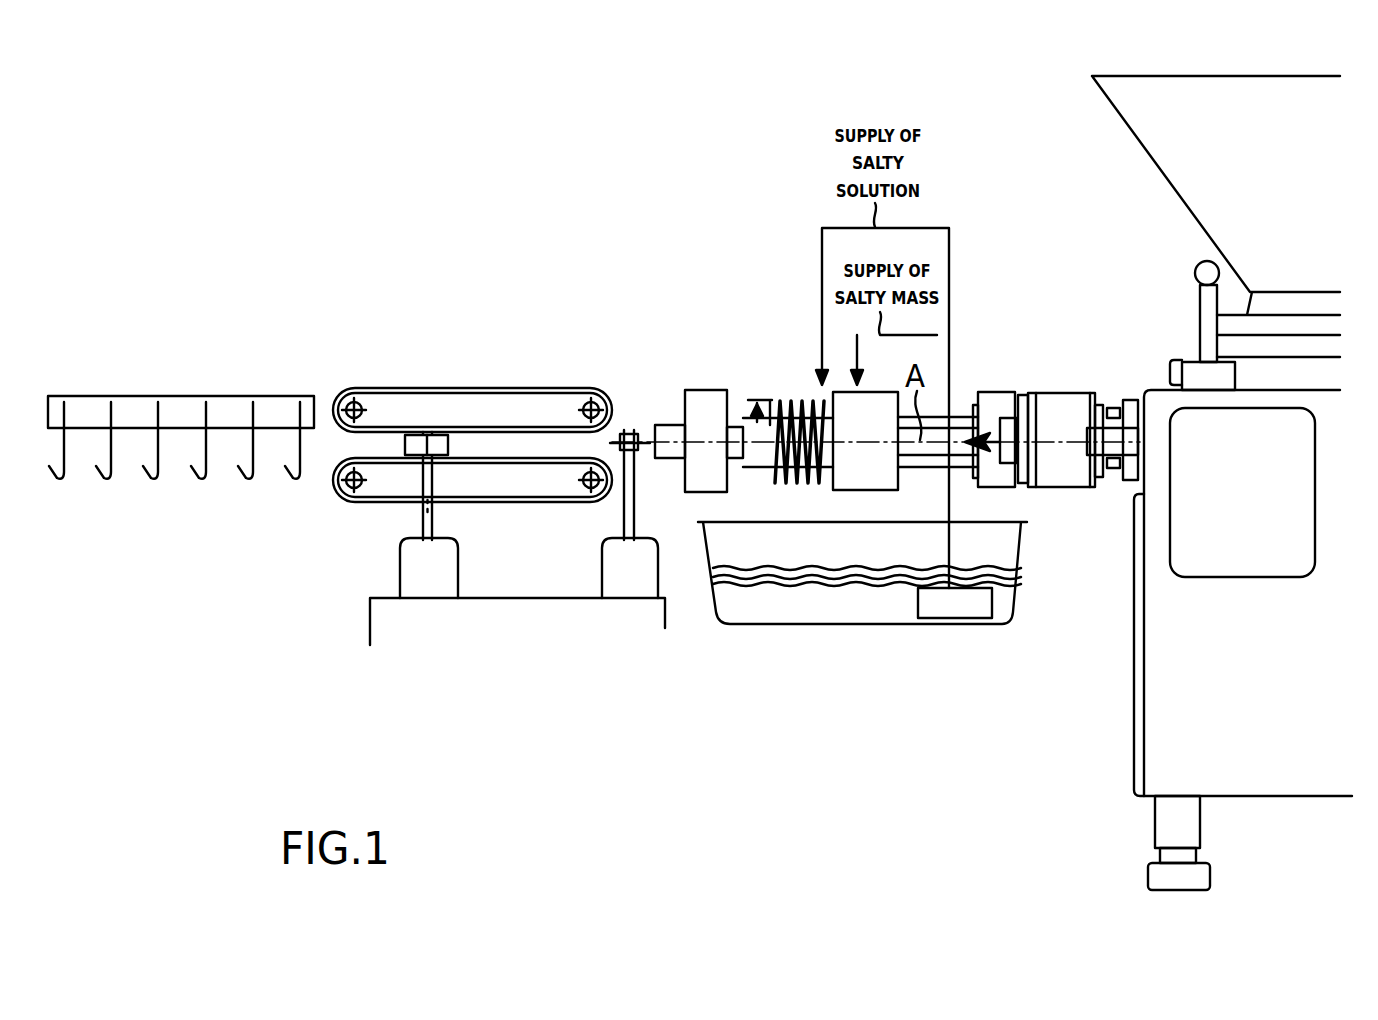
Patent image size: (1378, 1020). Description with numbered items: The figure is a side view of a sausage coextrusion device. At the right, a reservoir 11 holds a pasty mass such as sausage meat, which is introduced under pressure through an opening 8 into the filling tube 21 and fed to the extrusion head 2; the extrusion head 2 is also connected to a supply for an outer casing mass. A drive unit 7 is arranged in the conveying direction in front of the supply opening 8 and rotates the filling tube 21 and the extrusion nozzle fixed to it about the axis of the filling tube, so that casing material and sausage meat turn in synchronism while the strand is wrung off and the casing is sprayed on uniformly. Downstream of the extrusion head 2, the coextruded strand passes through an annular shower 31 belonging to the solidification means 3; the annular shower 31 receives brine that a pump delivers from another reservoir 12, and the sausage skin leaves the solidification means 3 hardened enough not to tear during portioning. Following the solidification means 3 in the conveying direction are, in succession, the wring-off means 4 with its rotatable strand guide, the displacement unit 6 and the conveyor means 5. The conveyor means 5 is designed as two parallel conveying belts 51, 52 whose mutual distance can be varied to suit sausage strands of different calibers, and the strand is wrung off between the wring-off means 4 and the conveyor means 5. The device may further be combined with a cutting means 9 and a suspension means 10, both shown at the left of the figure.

The suspension means 10 is at (172, 405).
The conveyor means 5 is at (472, 428).
The conveying belt 51 is at (358, 400).
The conveying belt 52 is at (378, 488).
The cutting means 9 is at (437, 440).
The displacement unit 6 is at (620, 410).
The wring-off means 4 is at (673, 410).
The annular shower 31 is at (770, 397).
The solidification means 3 is at (800, 372).
The extrusion head 2 is at (882, 393).
The filling tube 21 is at (985, 433).
The drive unit 7 is at (1050, 400).
The opening 8 is at (1013, 490).
The reservoir 11 is at (1180, 179).
The reservoir 12 is at (813, 613).